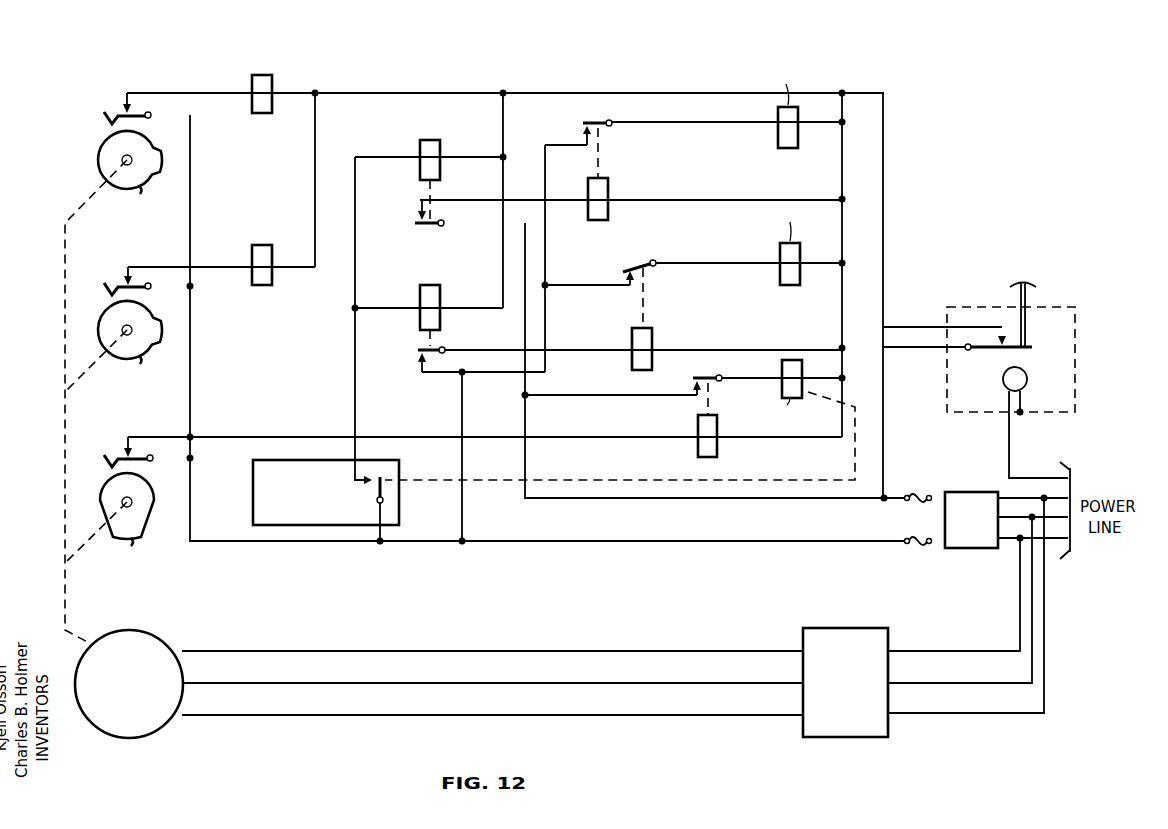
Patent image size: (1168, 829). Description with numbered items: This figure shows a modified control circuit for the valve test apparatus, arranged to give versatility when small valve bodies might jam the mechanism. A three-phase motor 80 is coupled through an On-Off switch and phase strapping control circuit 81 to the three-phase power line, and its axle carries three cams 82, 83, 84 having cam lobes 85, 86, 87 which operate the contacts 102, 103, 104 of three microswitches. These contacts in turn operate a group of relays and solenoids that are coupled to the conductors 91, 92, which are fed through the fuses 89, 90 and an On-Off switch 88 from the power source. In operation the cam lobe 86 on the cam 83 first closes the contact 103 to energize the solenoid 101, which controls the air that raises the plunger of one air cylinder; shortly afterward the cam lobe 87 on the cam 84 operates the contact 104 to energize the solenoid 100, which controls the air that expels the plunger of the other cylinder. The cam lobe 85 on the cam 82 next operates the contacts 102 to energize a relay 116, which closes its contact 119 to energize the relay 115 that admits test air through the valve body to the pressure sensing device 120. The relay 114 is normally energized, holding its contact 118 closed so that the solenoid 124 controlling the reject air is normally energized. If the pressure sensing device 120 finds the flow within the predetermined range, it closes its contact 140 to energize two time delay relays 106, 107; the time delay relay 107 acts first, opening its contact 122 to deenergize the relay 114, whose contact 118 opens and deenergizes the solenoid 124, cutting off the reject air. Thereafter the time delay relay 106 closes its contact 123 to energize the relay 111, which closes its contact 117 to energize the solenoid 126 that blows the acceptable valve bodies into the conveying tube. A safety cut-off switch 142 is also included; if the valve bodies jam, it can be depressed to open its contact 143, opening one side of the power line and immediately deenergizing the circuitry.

The 3-phase motor 80 is at (145, 735).
The On-Off switch and phase strapping control circuit 81 is at (852, 612).
The cam 82 is at (108, 490).
The cam 83 is at (112, 312).
The cam 84 is at (112, 145).
The cam lobe 85 is at (134, 545).
The cam lobe 86 is at (135, 365).
The cam lobe 87 is at (140, 192).
The On-Off switch 88 is at (982, 492).
The fuse 89 is at (922, 485).
The fuse 90 is at (922, 530).
The conductor 91 is at (866, 498).
The conductor 92 is at (866, 541).
The solenoid 100 is at (278, 118).
The solenoid 101 is at (280, 290).
The contacts 102 is at (125, 445).
The contact 103 is at (125, 280).
The contact 104 is at (125, 108).
The time delay relay 106 is at (420, 175).
The time delay relay 107 is at (420, 298).
The relay 111 is at (588, 184).
The relay 114 is at (632, 340).
The relay 115 is at (782, 368).
The relay 116 is at (698, 420).
The contact 117 is at (580, 128).
The contact 118 is at (628, 282).
The contact 119 is at (696, 388).
The pressure sensing device 120 is at (326, 492).
The contact 122 is at (416, 368).
The contact 123 is at (416, 213).
The solenoid 124 is at (780, 279).
The solenoid 126 is at (778, 142).
The contact 140 is at (378, 472).
The safety cut-off switch 142 is at (1040, 307).
The contact 143 is at (990, 348).